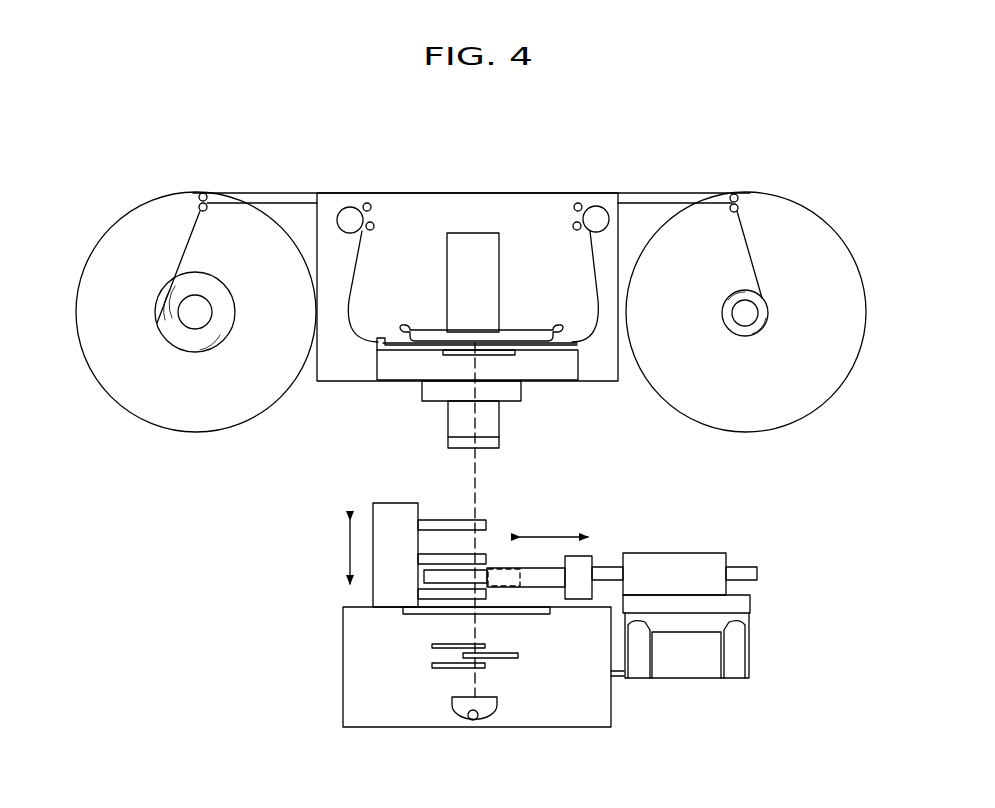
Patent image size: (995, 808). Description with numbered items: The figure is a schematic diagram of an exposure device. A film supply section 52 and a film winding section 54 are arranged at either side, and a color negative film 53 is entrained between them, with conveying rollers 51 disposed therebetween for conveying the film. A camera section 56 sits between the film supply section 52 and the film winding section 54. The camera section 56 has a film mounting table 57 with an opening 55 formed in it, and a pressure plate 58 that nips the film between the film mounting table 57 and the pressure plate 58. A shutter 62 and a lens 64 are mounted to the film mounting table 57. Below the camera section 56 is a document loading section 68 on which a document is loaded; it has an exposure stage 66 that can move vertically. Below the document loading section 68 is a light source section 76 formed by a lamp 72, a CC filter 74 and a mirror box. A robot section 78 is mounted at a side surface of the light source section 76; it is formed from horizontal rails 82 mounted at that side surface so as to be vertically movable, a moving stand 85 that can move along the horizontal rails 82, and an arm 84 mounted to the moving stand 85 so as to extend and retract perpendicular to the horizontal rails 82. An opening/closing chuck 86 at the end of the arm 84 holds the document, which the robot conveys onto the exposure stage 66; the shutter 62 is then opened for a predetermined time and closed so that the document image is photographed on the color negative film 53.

The conveying rollers 51 is at (350, 212).
The film supply section 52 is at (211, 418).
The color negative film 53 is at (355, 290).
The film winding section 54 is at (784, 208).
The opening 55 is at (445, 352).
The camera section 56 is at (355, 382).
The film mounting table 57 is at (548, 372).
The pressure plate 58 is at (512, 330).
The shutter 62 is at (523, 392).
The lens 64 is at (455, 449).
The exposure stage 66 is at (390, 503).
The document loading section 68 is at (502, 523).
The lamp 72 is at (500, 703).
The CC filter 74 is at (512, 655).
The light source section 76 is at (440, 727).
The robot section 78 is at (800, 588).
The horizontal rails 82 is at (742, 645).
The arm 84 is at (625, 570).
The moving stand 85 is at (710, 560).
The opening/closing chuck 86 is at (603, 573).